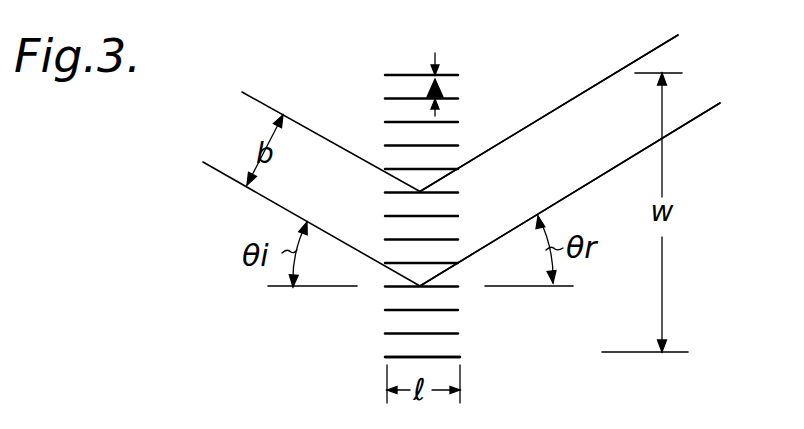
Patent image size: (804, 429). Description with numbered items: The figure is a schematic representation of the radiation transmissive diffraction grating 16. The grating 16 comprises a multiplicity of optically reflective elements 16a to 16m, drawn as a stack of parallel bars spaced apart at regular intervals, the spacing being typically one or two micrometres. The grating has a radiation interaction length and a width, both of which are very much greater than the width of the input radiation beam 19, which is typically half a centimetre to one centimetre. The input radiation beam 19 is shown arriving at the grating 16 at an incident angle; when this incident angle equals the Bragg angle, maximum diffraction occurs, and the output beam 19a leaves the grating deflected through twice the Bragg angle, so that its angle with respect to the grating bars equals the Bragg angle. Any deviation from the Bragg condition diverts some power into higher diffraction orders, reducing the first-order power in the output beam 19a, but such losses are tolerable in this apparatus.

The diffraction grating 16 is at (383, 340).
The optically reflective element 16m is at (455, 76).
The optically reflective element 16a is at (460, 357).
The input radiation beam 19 is at (305, 162).
The output beam 19a is at (573, 118).